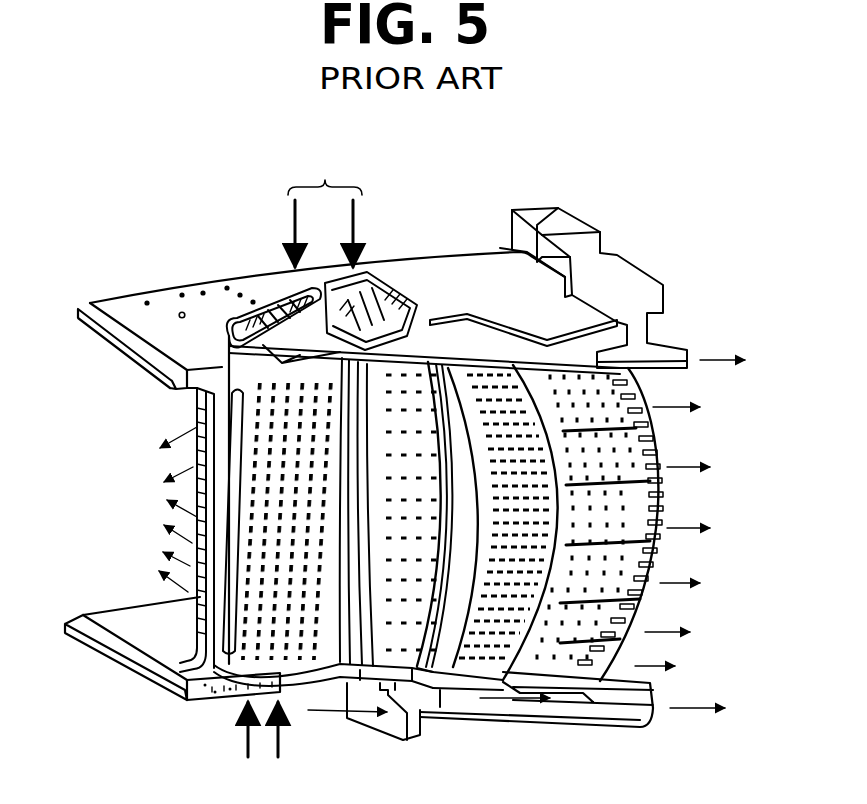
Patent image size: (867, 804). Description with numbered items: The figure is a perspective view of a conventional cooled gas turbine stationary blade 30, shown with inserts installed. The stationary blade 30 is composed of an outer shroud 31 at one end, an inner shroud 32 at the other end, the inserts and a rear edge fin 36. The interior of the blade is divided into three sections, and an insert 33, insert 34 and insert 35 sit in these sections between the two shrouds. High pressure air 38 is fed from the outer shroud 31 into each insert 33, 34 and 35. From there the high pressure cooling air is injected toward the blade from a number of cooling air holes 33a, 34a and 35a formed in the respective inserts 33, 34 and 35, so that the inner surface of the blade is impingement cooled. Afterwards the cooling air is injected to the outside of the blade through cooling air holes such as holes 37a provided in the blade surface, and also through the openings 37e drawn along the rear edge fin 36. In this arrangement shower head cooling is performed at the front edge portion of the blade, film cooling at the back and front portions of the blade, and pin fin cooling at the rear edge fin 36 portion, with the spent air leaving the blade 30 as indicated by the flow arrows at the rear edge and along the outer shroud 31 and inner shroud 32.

The stationary blade 30 is at (160, 400).
The outer shroud 31 is at (200, 272).
The inner shroud 32 is at (560, 723).
The insert 33 is at (300, 382).
The insert 34 is at (383, 378).
The insert 35 is at (475, 375).
The rear edge fin 36 is at (600, 412).
The cooling air holes 33a is at (280, 655).
The cooling air holes 34a is at (393, 645).
The cooling air holes 35a is at (465, 647).
The cooling air holes 37a is at (177, 517).
The trailing edge cooling holes 37e is at (648, 448).
The high pressure air 38 is at (322, 182).